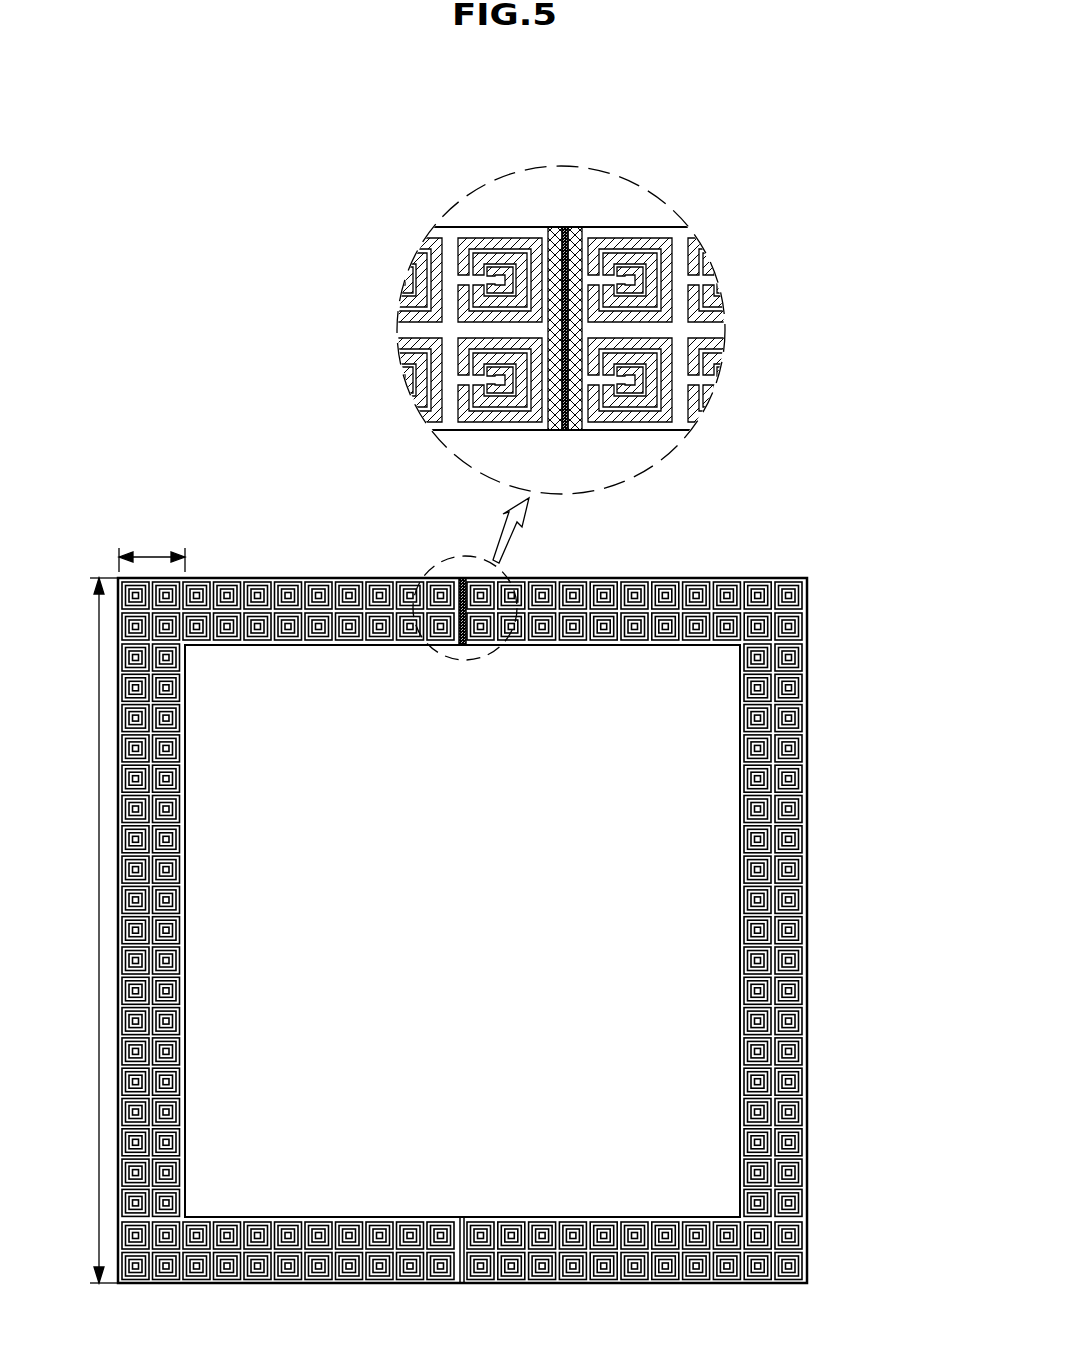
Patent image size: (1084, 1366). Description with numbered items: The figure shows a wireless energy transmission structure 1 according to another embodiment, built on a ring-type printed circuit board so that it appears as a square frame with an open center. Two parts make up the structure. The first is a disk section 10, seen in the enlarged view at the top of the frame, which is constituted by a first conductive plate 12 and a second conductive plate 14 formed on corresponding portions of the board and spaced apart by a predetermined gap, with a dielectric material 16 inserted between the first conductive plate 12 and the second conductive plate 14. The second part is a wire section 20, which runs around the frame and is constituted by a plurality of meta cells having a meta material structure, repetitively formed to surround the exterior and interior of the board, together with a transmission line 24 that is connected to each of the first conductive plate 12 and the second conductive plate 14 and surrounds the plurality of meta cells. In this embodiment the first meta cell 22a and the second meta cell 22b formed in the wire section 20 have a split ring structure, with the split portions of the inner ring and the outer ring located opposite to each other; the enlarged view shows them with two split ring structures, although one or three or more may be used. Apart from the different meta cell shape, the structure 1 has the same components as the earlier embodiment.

The wireless energy transmission structure 1 is at (251, 388).
The disk section 10 is at (617, 118).
The first conductive plate 12 is at (555, 228).
The second conductive plate 14 is at (577, 228).
The dielectric material 16 is at (566, 228).
The wire section 20 is at (817, 283).
The first meta cell 22a is at (668, 378).
The second meta cell 22b is at (668, 292).
The transmission line 24 is at (718, 328).